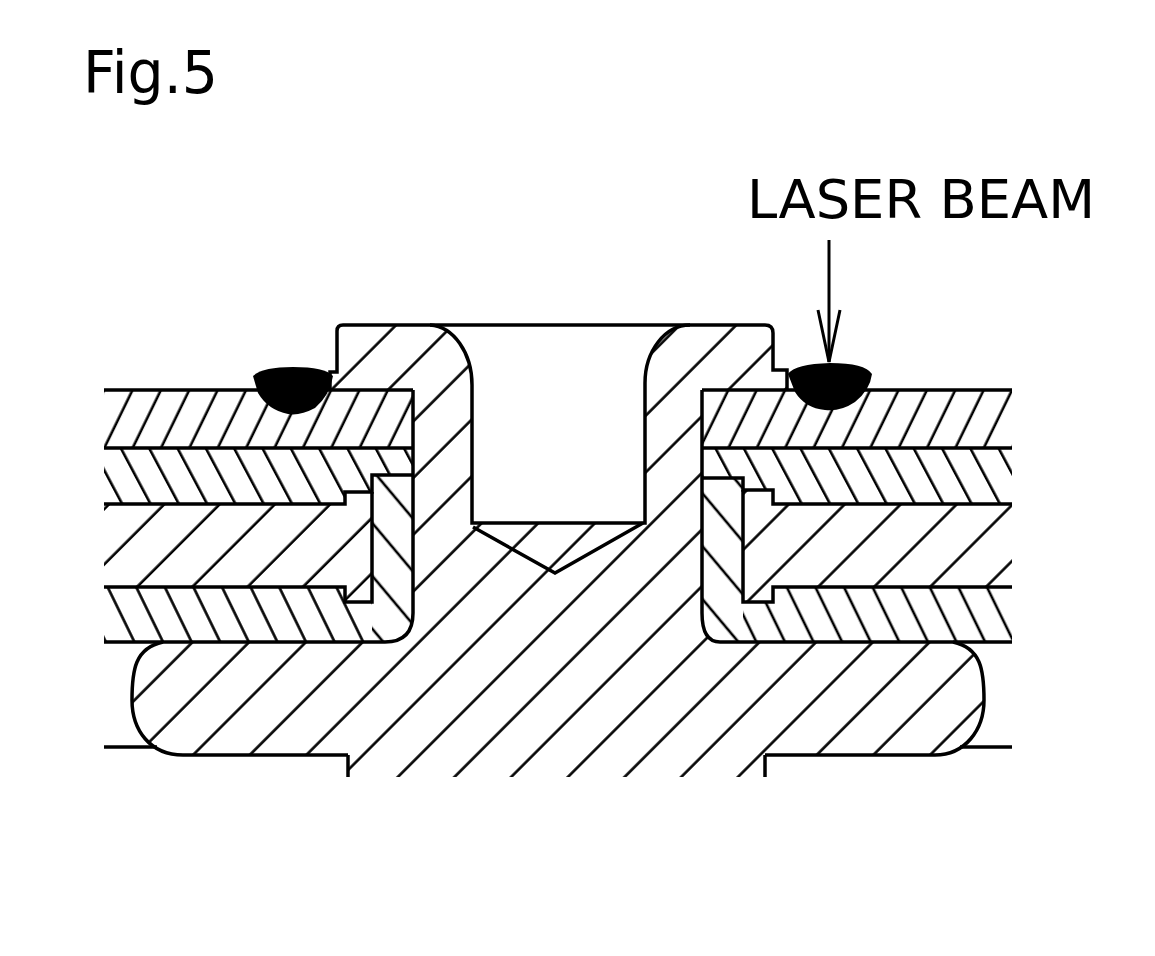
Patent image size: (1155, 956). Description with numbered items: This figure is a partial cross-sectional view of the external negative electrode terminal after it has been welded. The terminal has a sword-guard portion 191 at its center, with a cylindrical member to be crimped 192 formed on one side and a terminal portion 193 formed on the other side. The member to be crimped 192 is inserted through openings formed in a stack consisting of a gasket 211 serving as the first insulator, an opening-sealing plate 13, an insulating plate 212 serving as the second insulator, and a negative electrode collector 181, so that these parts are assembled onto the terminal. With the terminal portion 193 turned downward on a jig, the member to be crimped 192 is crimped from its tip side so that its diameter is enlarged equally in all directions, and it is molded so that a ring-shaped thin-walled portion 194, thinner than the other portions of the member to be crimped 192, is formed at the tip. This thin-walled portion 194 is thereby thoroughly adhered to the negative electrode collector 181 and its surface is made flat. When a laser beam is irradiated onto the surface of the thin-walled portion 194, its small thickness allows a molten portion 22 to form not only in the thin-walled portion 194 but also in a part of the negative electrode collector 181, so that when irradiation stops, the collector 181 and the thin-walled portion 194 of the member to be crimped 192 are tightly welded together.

The opening-sealing plate 13 is at (968, 548).
The negative electrode collector 181 is at (960, 415).
The sword-guard portion 191 is at (923, 722).
The cylindrical crimping member to be crimped 192 is at (388, 357).
The terminal portion 193 is at (495, 755).
The thin-walled portion 194 is at (250, 378).
The gasket 211 is at (965, 618).
The insulating plate 212 is at (980, 477).
The molten portion 22 is at (847, 363).